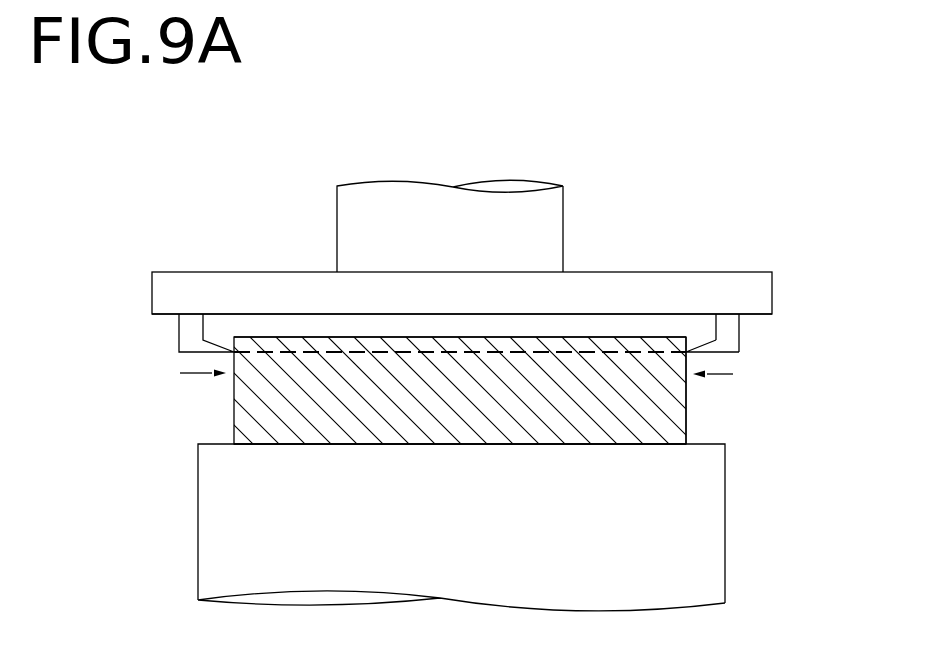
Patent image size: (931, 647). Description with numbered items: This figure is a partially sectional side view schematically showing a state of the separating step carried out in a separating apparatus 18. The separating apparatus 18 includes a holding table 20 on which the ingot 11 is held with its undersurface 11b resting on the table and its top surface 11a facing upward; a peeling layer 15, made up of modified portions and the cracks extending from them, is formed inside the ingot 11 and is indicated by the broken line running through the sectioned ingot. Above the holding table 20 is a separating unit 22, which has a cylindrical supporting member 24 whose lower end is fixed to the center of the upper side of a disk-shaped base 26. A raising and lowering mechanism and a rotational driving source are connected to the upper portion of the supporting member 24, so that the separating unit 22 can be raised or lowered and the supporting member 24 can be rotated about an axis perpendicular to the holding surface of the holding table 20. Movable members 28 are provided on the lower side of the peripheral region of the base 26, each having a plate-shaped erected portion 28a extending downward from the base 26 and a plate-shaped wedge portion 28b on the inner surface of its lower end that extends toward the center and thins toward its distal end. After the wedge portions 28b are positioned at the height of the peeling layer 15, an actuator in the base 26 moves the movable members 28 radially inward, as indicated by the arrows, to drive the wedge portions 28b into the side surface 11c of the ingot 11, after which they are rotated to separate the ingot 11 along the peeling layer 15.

The separating apparatus 18 is at (463, 171).
The supporting member 24 is at (553, 223).
The separating unit 22 is at (786, 271).
The base 26 is at (300, 278).
The movable member 28 is at (539, 352).
The erected portion 28a is at (738, 333).
The wedge portion 28b is at (708, 352).
The ingot 11 is at (458, 370).
The top surface 11a is at (625, 337).
The undersurface 11b is at (608, 445).
The side surface 11c is at (686, 415).
The peeling layer 15 is at (380, 352).
The holding table 20 is at (713, 545).